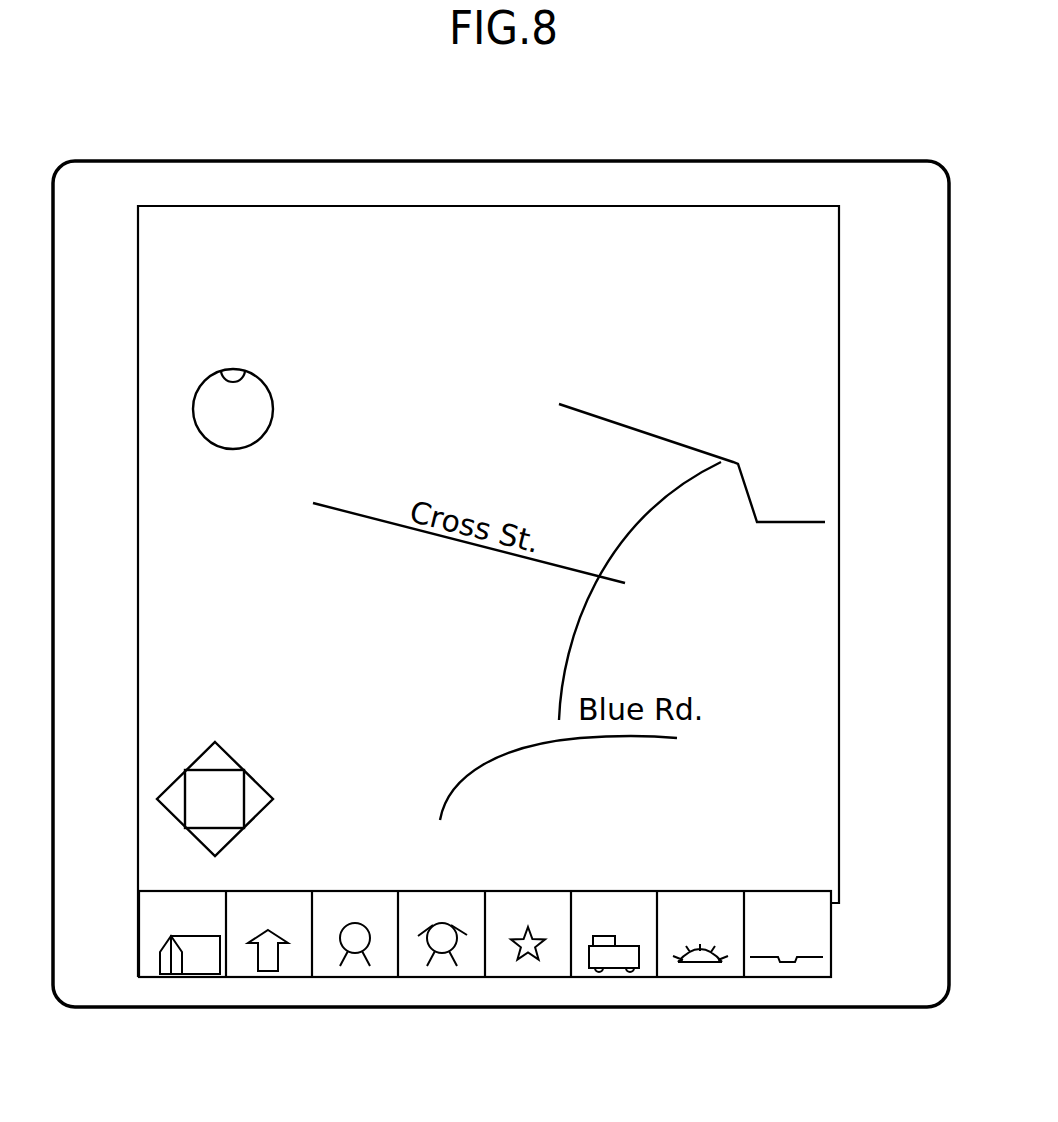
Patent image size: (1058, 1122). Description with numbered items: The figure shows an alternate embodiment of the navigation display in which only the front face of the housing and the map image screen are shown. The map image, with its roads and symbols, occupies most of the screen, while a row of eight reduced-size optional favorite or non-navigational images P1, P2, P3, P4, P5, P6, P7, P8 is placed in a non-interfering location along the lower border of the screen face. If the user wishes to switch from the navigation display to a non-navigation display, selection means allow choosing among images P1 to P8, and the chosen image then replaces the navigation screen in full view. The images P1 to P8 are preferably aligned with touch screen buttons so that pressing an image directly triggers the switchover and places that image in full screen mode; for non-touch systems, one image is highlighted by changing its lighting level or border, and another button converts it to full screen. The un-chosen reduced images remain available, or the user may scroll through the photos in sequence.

The reduced-size image P1 is at (185, 977).
The reduced-size image P2 is at (270, 977).
The reduced-size image P3 is at (356, 977).
The reduced-size image P4 is at (443, 977).
The reduced-size image P5 is at (528, 977).
The reduced-size image P6 is at (616, 977).
The reduced-size image P7 is at (702, 977).
The reduced-size image P8 is at (788, 977).